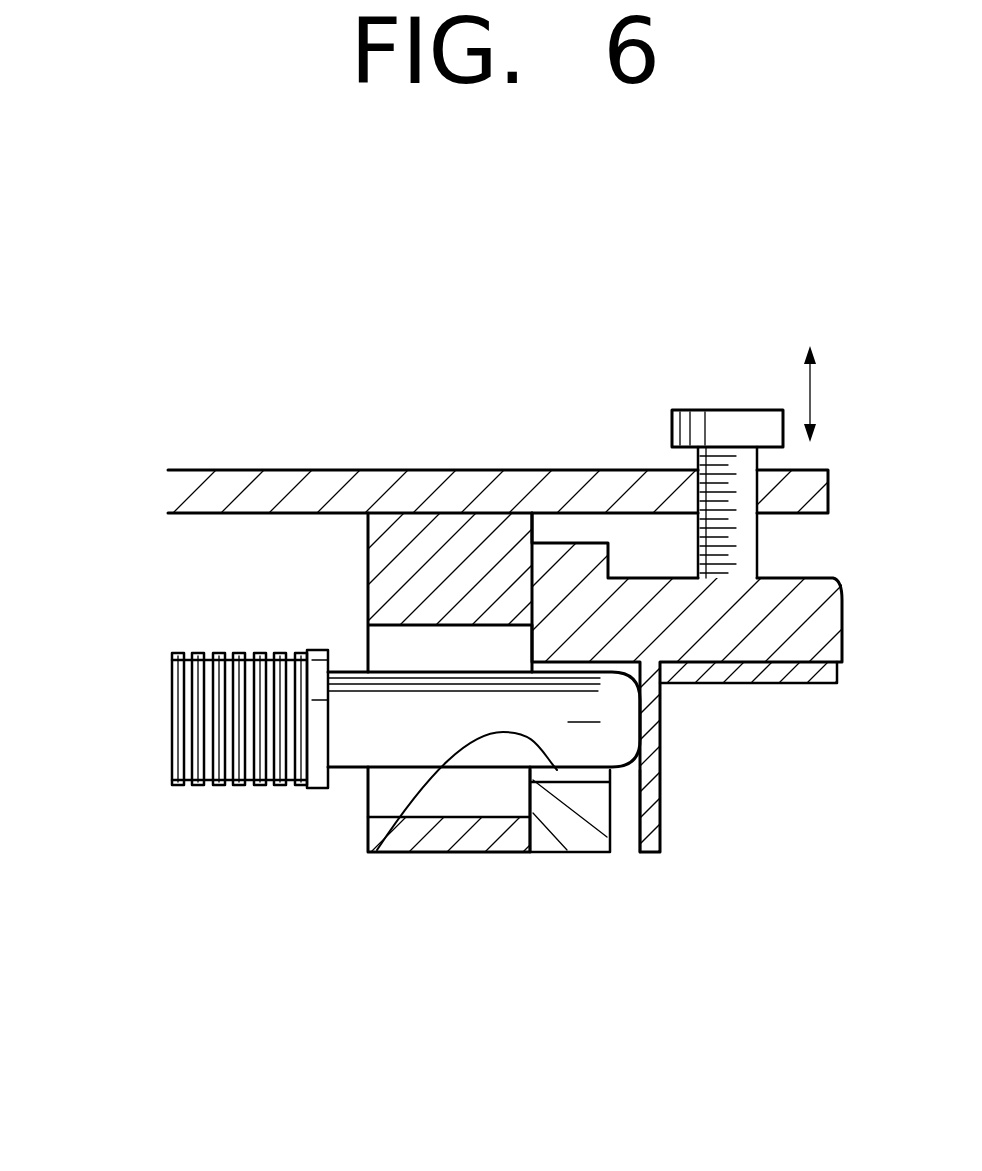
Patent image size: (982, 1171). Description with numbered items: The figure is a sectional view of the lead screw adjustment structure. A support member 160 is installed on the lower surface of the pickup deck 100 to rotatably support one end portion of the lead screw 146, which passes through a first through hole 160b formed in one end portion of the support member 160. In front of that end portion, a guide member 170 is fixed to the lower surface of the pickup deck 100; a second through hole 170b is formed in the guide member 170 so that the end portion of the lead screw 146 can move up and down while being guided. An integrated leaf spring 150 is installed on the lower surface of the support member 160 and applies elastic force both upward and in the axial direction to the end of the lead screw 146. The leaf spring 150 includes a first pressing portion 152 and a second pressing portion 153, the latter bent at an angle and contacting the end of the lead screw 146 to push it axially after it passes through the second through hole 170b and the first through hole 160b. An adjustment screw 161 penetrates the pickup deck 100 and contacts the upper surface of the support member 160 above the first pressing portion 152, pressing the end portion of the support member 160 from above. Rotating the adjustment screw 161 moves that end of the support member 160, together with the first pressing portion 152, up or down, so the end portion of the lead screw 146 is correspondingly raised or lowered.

The pickup deck 100 is at (302, 468).
The adjustment screw 161 is at (726, 412).
The leaf spring 150 is at (670, 763).
The first pressing portion 152 is at (817, 688).
The second pressing portion 153 is at (662, 782).
The guide member 170 is at (385, 761).
The second through hole 170b is at (378, 642).
The support member 160 is at (409, 873).
The first through hole 160b is at (368, 835).
The lead screw 146 is at (166, 797).